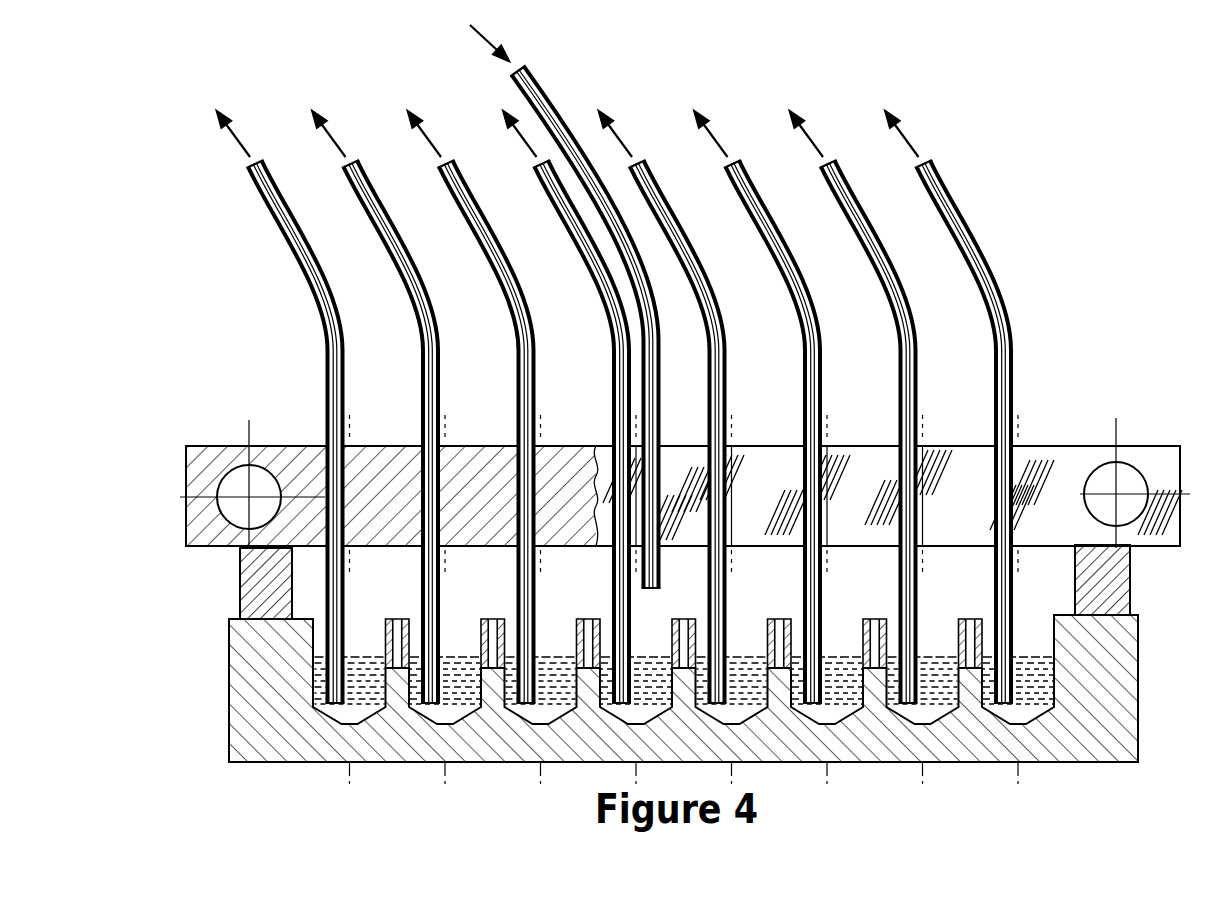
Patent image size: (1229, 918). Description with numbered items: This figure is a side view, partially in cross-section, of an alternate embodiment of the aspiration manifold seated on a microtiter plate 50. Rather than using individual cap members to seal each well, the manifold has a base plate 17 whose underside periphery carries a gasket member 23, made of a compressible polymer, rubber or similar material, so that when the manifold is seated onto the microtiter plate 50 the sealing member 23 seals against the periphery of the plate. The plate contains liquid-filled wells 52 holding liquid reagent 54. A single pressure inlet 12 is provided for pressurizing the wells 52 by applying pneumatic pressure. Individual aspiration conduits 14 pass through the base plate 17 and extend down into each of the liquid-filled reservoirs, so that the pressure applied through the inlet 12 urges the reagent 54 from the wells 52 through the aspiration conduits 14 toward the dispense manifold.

The pressure inlet 12 is at (570, 110).
The aspiration conduits 14 is at (268, 188).
The base plate 17 is at (1157, 455).
The gasket member 23 is at (1127, 597).
The microtiter plate 50 is at (1120, 730).
The wells 52 is at (1062, 633).
The liquid reagent 54 is at (1038, 692).